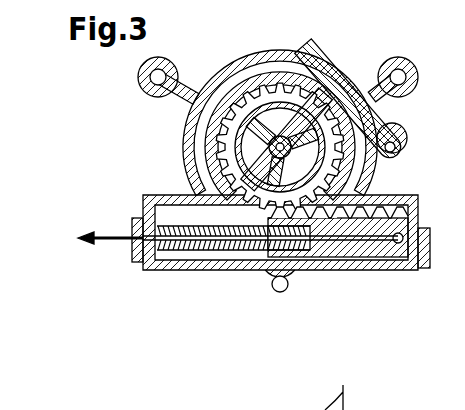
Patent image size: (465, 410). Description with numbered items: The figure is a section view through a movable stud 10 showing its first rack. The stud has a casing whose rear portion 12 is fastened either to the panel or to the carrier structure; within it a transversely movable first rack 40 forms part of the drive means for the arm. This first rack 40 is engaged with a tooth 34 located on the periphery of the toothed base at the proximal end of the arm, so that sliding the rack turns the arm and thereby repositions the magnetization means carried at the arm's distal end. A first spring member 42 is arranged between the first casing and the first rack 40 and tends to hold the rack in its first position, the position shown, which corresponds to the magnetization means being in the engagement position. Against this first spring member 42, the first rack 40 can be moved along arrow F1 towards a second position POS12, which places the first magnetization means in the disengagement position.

The stud 10 is at (126, 317).
The rear portion 12 is at (183, 139).
The tooth 34 is at (338, 100).
The first rack 40 is at (365, 258).
The first spring member 42 is at (196, 252).
The arrow F1 is at (98, 239).
The second position POS12 is at (229, 257).